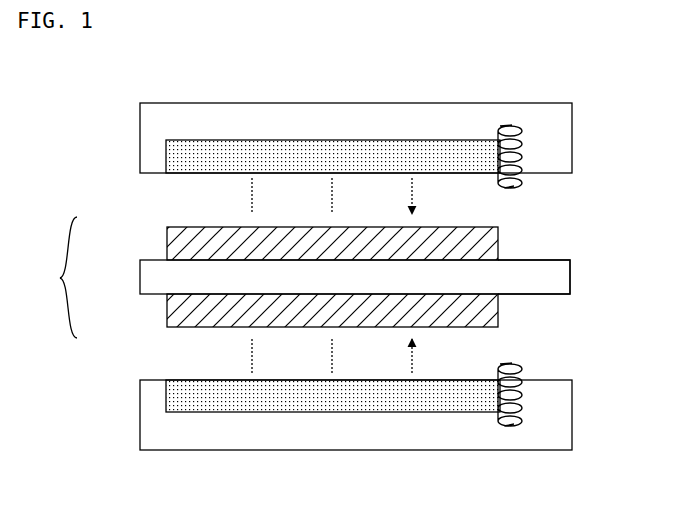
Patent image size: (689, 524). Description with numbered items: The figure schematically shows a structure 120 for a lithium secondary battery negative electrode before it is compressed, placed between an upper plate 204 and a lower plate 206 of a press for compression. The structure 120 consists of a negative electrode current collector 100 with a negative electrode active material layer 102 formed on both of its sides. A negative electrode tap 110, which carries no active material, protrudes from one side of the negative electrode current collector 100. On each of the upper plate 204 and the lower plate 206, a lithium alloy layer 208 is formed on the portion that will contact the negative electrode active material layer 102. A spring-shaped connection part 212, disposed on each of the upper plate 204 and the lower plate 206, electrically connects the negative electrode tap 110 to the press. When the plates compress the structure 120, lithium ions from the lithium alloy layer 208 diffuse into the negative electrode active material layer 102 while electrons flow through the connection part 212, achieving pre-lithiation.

The negative electrode current collector 100 is at (145, 278).
The negative electrode active material layer 102 is at (167, 240).
The negative electrode tap 110 is at (570, 277).
The structure 120 is at (297, 277).
The upper plate 204 is at (572, 128).
The lower plate 206 is at (572, 410).
The lithium alloy layer 208 is at (334, 148).
The connection part 212 is at (512, 186).